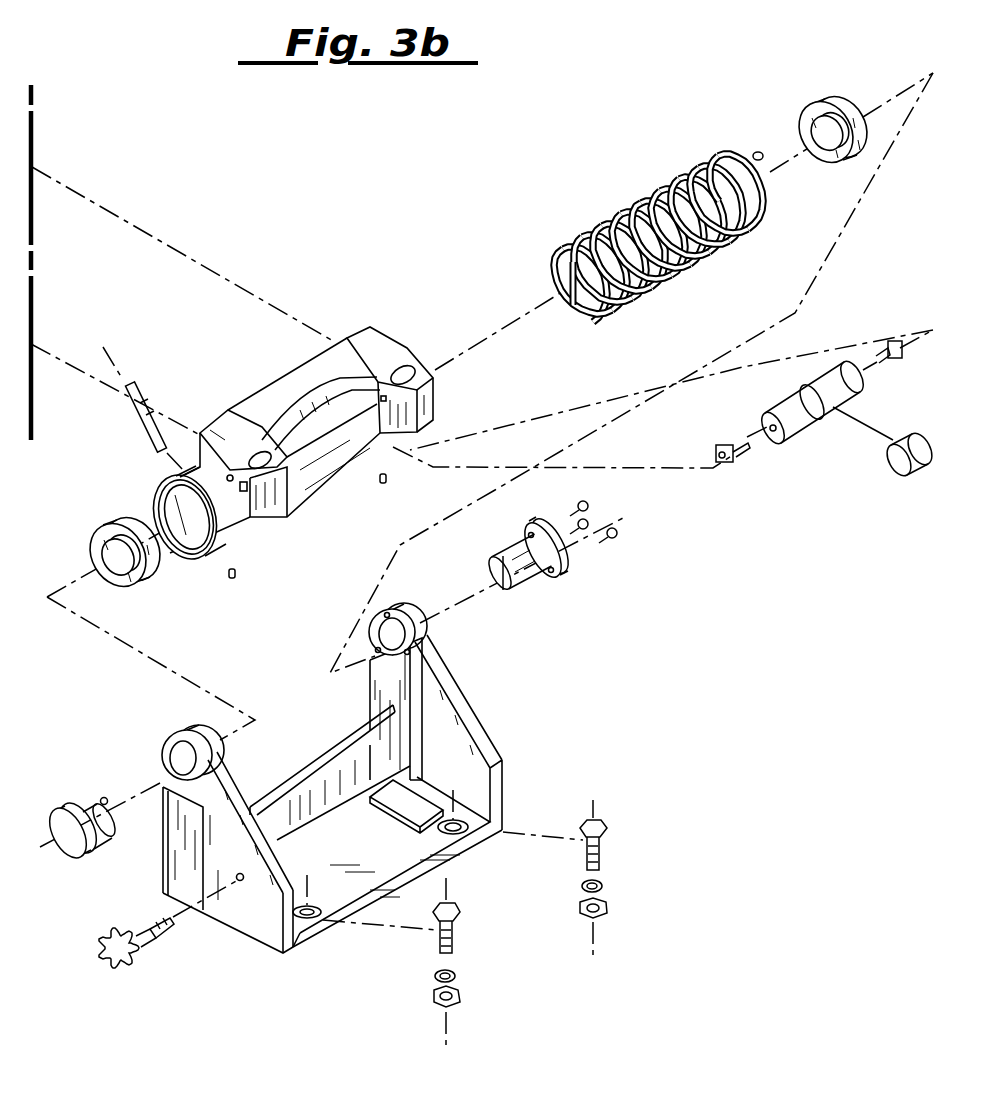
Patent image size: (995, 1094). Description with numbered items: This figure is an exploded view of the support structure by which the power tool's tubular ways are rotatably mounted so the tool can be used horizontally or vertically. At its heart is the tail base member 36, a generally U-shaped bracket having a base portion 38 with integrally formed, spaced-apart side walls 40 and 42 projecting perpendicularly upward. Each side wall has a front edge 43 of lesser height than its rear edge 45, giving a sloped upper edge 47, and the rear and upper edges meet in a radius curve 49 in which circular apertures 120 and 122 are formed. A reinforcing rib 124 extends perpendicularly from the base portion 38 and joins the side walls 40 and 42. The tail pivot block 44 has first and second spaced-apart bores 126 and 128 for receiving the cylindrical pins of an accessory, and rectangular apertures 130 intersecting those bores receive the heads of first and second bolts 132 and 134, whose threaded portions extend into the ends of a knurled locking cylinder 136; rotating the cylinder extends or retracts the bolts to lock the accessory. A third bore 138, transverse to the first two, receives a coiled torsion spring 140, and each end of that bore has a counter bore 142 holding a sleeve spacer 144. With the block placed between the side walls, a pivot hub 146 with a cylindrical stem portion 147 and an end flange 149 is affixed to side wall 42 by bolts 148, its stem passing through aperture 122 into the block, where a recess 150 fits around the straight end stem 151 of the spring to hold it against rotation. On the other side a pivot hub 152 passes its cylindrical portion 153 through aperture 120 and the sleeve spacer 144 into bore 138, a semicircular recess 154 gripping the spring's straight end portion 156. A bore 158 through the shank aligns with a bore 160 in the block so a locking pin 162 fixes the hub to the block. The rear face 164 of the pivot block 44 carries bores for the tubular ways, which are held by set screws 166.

The tail base member 36 is at (346, 784).
The base portion 38 is at (365, 868).
The side wall 40 is at (248, 860).
The side wall 42 is at (463, 769).
The front edge 43 is at (505, 783).
The tail pivot block 44 is at (277, 455).
The rear edge 45 is at (370, 700).
The sloped upper edge 47 is at (227, 774).
The radius curve 49 is at (370, 609).
The circular aperture 120 is at (176, 745).
The circular aperture 122 is at (380, 632).
The reinforcing rib 124 is at (325, 816).
The first bore 126 is at (411, 371).
The second bore 128 is at (300, 467).
The rectangular apertures 130 is at (244, 493).
The first bolt 132 is at (728, 463).
The second bolt 134 is at (897, 360).
The locking cylinder 136 is at (806, 427).
The third bore 138 is at (187, 504).
The coiled torsion spring 140 is at (620, 212).
The counter bore 142 is at (183, 540).
The sleeve spacer 144 is at (828, 100).
The pivot hub 146 is at (544, 580).
The cylindrical stem portion 147 is at (514, 560).
The bolts 148 is at (614, 528).
The end flange 149 is at (557, 573).
The recess 150 is at (504, 582).
The straight end stem 151 is at (755, 151).
The pivot hub 152 is at (93, 815).
The cylindrical portion 153 is at (93, 800).
The semicircular recess 154 is at (107, 799).
The straight end portion 156 is at (572, 286).
The bore 158 is at (78, 805).
The bore 160 is at (181, 476).
The locking pin 162 is at (143, 388).
The rear face 164 is at (221, 428).
The set screws 166 is at (388, 480).